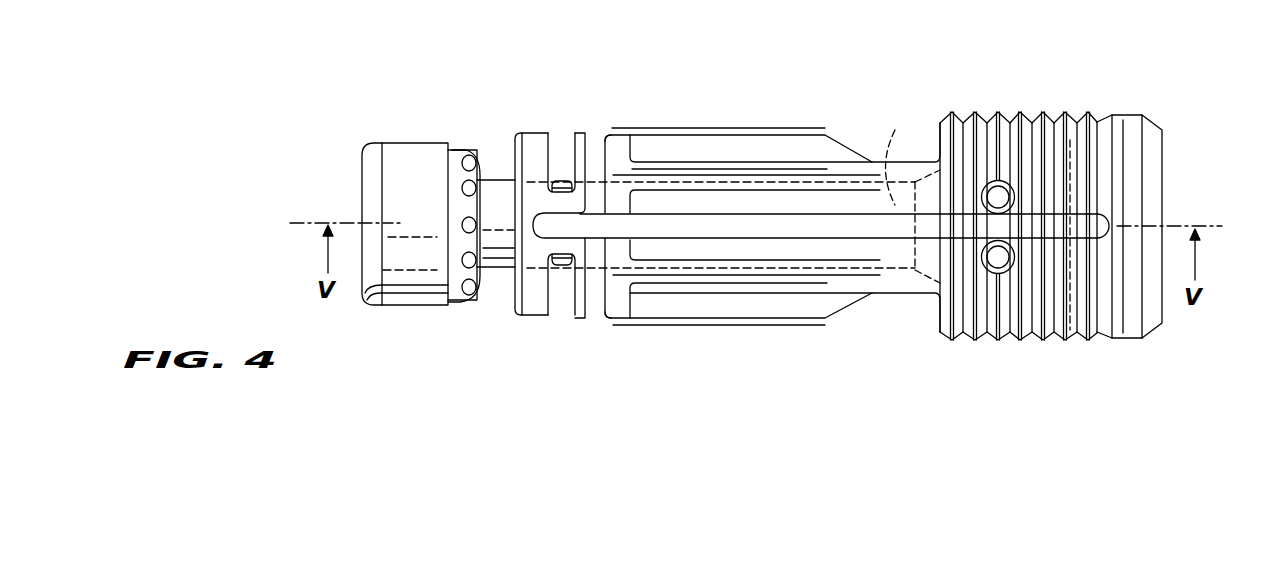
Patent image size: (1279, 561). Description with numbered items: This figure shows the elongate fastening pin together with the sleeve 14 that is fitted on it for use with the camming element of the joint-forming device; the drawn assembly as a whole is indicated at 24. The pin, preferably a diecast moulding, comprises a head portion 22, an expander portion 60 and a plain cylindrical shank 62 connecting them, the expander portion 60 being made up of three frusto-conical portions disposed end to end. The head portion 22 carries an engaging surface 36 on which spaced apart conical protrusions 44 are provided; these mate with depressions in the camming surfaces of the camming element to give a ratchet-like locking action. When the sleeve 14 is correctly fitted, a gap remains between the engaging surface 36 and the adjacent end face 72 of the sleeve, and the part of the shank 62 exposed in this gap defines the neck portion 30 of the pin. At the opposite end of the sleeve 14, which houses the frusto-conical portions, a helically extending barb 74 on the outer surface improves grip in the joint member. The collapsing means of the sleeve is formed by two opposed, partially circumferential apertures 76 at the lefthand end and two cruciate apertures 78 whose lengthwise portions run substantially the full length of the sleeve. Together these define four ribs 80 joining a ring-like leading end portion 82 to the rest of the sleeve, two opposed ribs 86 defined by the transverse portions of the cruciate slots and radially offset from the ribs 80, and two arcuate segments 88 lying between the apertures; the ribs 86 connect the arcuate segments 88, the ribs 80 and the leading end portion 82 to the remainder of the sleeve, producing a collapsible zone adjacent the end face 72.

The sleeve 14 is at (702, 128).
The head portion 22 is at (398, 282).
The coupling assembly 24 is at (334, 191).
The neck portion 30 is at (500, 190).
The engaging surface 36 is at (460, 180).
The conical protrusions 44 is at (473, 152).
The expander portion 60 is at (1166, 157).
The shank 62 is at (896, 158).
The end face 72 is at (512, 300).
The helically extending barb 74 is at (997, 342).
The opposed apertures 76 is at (557, 133).
The cruciate apertures 78 is at (780, 225).
The ribs 80 is at (551, 197).
The ring-like leading end portion 82 is at (533, 317).
The opposed ribs 86 is at (598, 137).
The arcuate segments 88 is at (576, 137).